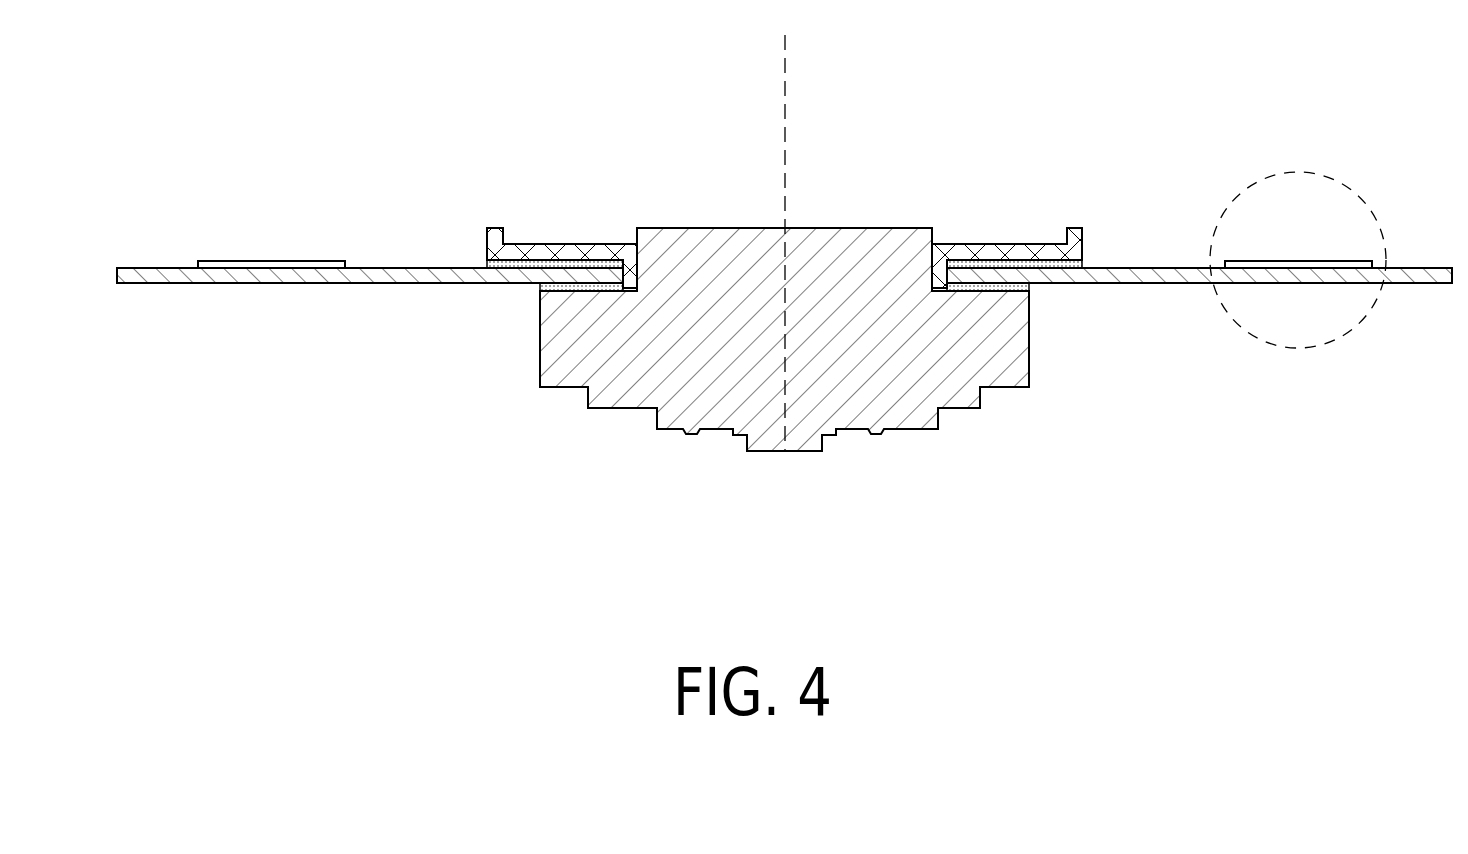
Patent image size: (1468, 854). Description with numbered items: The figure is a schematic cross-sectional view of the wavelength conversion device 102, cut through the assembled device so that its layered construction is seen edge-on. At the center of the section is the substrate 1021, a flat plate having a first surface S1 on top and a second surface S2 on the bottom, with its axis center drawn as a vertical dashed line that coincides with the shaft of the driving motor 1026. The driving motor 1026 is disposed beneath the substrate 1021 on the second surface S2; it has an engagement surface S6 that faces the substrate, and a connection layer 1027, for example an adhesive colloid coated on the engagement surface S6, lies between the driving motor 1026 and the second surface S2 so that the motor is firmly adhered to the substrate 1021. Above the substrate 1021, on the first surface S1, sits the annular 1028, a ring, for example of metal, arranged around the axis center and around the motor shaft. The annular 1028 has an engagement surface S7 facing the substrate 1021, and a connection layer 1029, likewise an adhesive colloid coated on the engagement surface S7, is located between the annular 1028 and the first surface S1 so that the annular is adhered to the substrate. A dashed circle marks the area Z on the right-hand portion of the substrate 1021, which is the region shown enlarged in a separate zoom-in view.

The wavelength conversion device 102 is at (294, 68).
The substrate 1021 is at (766, 342).
The first surface S1 is at (168, 255).
The second surface S2 is at (163, 283).
The driving motor 1026 is at (811, 362).
The engagement surface S6 is at (958, 292).
The connection layer 1027 is at (1000, 288).
The annular 1028 is at (852, 193).
The engagement surface S7 is at (1040, 257).
The connection layer 1029 is at (985, 262).
The area Z is at (1295, 172).